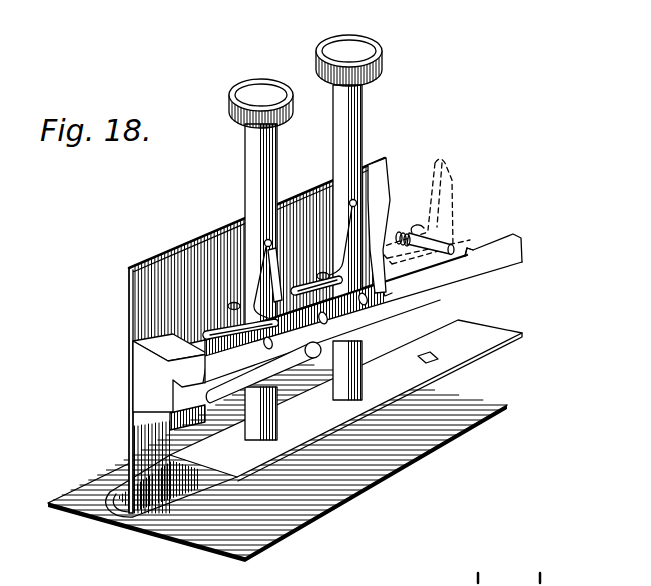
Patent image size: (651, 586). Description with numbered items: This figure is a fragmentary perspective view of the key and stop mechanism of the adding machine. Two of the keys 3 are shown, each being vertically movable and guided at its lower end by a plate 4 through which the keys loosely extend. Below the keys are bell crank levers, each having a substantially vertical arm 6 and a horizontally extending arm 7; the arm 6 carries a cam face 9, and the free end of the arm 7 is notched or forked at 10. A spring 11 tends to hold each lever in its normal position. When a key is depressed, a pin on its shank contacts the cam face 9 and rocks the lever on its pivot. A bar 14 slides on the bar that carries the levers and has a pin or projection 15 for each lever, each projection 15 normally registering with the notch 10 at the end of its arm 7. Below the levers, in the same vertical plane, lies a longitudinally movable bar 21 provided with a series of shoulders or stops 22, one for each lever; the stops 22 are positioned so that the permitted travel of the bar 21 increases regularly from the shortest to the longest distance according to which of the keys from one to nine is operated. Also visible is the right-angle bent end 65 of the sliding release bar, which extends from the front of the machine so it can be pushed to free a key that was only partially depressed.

The key 3 is at (318, 69).
The plate 4 is at (508, 337).
The vertical arm of bell crank lever 6 is at (350, 225).
The horizontal arm of bell crank lever 7 is at (299, 289).
The cam face 9 is at (274, 262).
The notch 10 is at (295, 331).
The spring 11 is at (322, 272).
The sliding bar 14 is at (347, 300).
The projection 15 is at (278, 297).
The longitudinally movable bar 21 is at (520, 248).
The stop 22 is at (387, 295).
The bent end of sliding release bar 65 is at (122, 508).